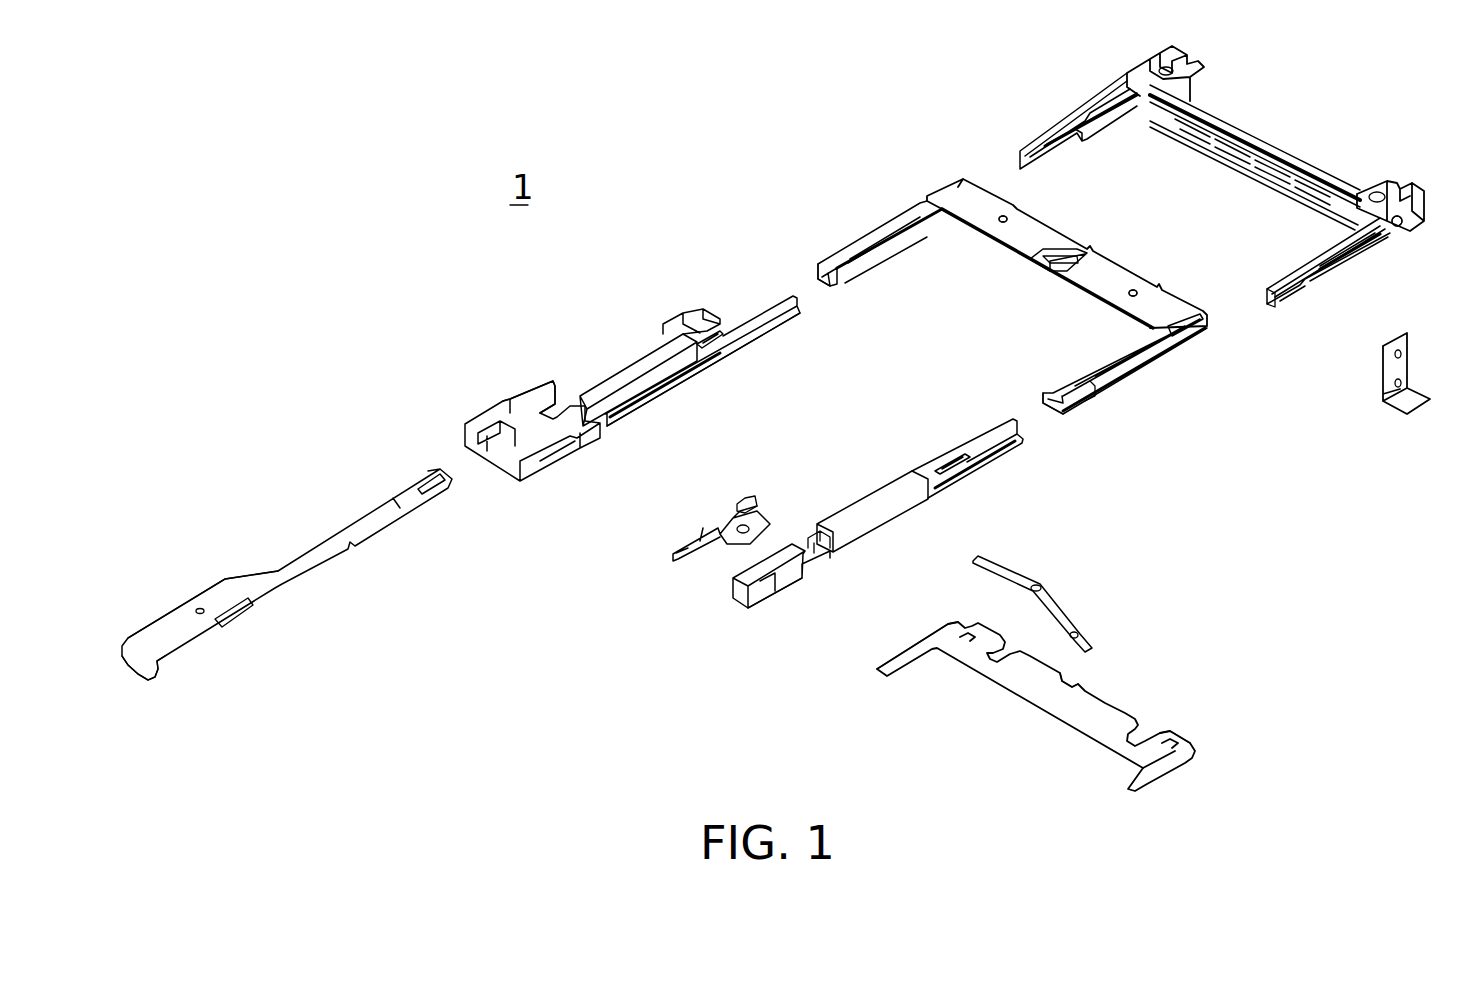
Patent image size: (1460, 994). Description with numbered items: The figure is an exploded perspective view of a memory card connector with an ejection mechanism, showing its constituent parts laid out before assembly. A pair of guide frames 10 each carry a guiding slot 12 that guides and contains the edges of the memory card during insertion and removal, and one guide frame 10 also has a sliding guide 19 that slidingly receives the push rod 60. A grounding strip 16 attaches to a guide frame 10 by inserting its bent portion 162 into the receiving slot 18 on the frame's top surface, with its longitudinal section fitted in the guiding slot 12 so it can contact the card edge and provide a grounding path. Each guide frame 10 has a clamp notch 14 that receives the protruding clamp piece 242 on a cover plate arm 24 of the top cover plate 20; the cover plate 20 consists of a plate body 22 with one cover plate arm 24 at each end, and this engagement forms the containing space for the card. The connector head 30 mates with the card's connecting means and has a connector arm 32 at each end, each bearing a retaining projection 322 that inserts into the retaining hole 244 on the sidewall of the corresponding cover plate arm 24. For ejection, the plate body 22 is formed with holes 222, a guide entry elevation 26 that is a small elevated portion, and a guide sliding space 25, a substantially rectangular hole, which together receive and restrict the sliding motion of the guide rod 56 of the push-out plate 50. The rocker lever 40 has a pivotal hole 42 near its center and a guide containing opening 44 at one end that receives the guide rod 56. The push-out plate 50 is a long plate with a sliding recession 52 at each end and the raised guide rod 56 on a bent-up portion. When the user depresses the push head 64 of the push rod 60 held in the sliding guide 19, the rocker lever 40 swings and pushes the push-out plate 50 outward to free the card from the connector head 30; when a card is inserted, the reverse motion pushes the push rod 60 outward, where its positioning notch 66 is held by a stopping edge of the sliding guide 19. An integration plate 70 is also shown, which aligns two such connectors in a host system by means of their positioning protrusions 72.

The guide frame 10 is at (642, 372).
The guiding slot 12 is at (642, 397).
The clamp notch 14 is at (713, 337).
The grounding strip 16 is at (723, 520).
The bent portion 162 is at (757, 497).
The receiving slot 18 is at (827, 538).
The sliding guide 19 is at (695, 310).
The top cover plate 20 is at (969, 167).
The plate body 22 is at (1026, 212).
The hole 222 is at (1001, 218).
The cover plate arm 24 is at (903, 215).
The clamp piece 242 is at (850, 270).
The retaining hole 244 is at (1100, 392).
The guide sliding space 25 is at (1030, 258).
The guide entry elevation 26 is at (1043, 257).
The connector head 30 is at (1253, 147).
The connector arm 32 is at (1100, 112).
The retaining projection 322 is at (1270, 298).
The rocker lever 40 is at (998, 553).
The pivotal hole 42 is at (1040, 583).
The guide containing opening 44 is at (1077, 628).
The push-out plate 50 is at (1070, 733).
The sliding recession 52 is at (973, 652).
The guide rod 56 is at (1060, 685).
The push rod 60 is at (273, 578).
The push head 64 is at (163, 662).
The positioning notch 66 is at (207, 590).
The integration plate 70 is at (1385, 392).
The positioning protrusion 72 is at (1395, 225).